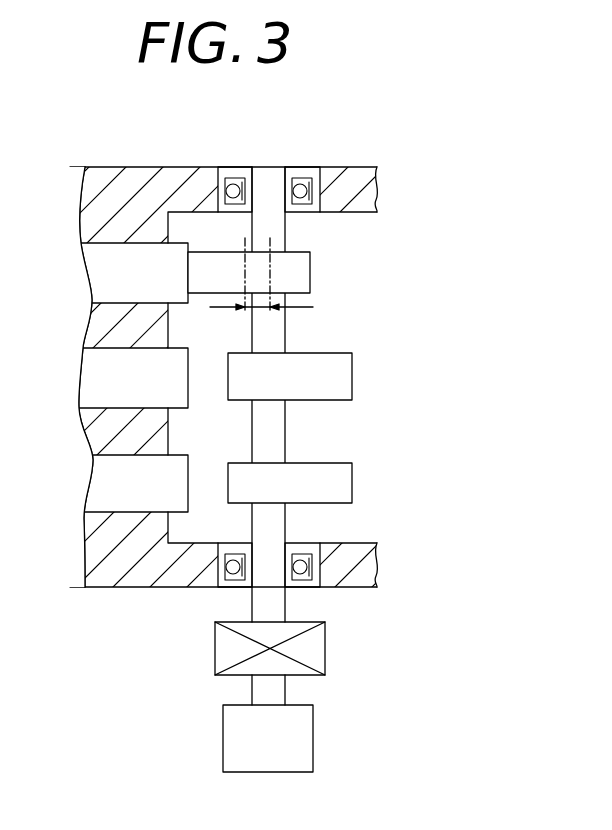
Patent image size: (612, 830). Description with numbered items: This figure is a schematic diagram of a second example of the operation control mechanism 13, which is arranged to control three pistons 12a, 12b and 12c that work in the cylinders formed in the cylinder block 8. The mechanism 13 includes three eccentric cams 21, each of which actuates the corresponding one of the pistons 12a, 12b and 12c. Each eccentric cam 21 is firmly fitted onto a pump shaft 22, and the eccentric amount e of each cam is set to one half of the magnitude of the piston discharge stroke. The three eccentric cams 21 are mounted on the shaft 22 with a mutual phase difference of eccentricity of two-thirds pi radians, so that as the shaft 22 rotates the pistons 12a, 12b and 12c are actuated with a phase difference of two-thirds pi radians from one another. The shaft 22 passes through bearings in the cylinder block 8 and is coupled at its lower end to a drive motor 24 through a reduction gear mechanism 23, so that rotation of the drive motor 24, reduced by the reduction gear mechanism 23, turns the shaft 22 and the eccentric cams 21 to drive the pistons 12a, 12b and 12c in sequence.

The cylinder block 8 is at (92, 186).
The piston 12a is at (90, 256).
The piston 12b is at (88, 361).
The piston 12c is at (94, 470).
The operation control mechanism 13 is at (416, 170).
The eccentric cam 21 is at (300, 274).
The pump shaft 22 is at (277, 231).
The reduction gear mechanism 23 is at (316, 646).
The drive motor 24 is at (314, 729).
The eccentric amount e is at (258, 310).